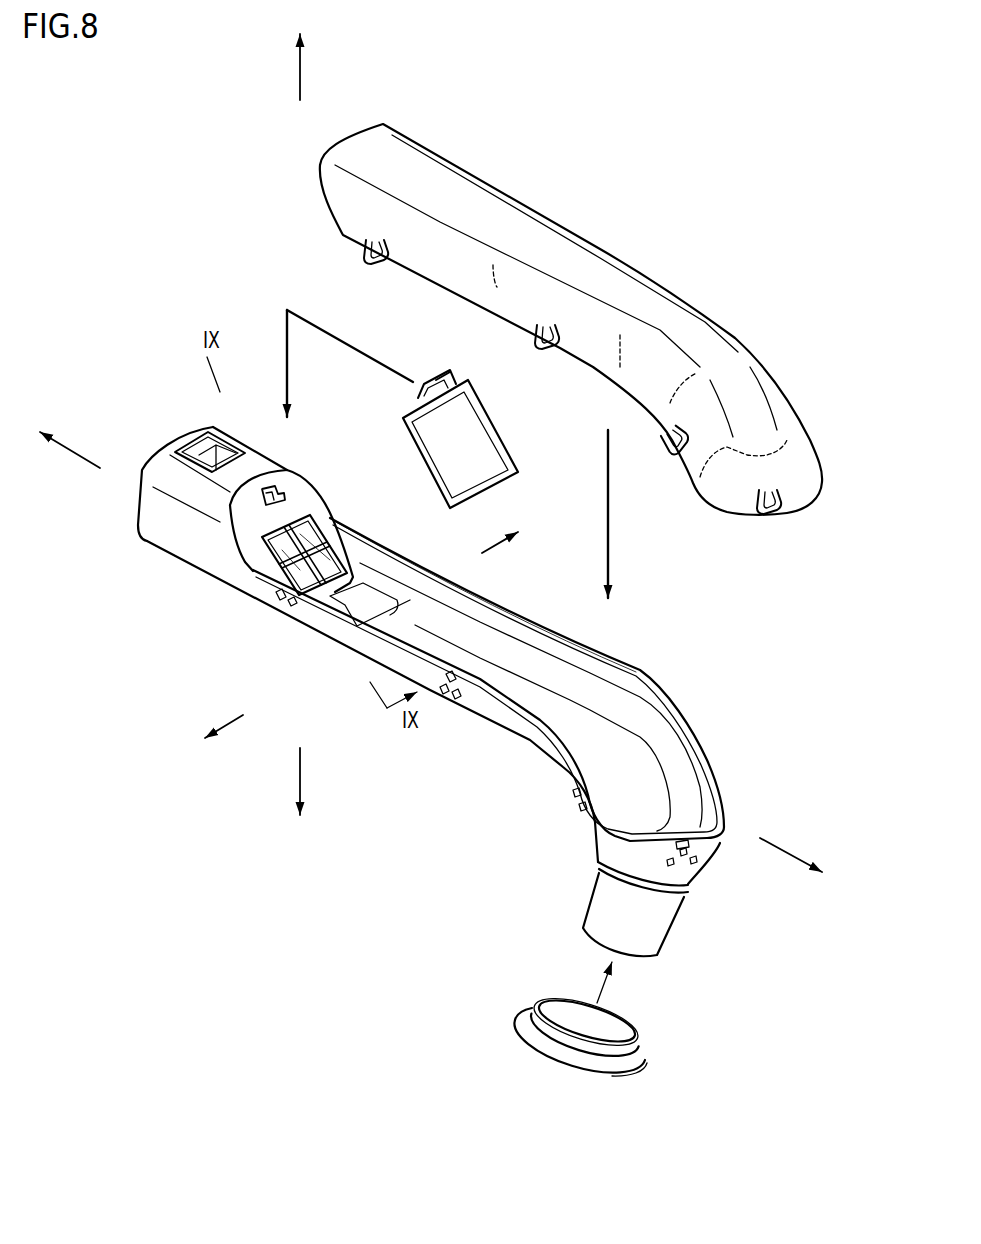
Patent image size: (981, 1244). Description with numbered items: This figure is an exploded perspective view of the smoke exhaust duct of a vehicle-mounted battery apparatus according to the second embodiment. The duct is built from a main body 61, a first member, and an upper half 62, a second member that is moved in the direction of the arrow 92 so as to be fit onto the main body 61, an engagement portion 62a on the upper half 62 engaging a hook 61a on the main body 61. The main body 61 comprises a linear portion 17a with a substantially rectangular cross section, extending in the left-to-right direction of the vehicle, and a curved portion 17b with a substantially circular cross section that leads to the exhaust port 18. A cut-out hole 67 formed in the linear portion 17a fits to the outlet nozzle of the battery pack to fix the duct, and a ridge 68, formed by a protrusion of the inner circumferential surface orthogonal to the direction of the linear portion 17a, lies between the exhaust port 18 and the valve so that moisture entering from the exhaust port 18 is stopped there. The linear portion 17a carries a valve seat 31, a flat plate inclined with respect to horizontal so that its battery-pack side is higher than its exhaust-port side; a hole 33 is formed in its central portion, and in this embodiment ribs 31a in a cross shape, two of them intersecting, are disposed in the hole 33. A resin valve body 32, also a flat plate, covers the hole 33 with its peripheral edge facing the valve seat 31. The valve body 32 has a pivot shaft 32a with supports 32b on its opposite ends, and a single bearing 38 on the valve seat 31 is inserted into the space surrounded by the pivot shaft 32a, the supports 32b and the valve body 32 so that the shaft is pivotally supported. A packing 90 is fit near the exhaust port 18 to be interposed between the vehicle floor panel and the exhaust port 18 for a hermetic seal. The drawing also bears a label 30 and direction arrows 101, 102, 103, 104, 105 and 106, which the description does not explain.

The linear portion 17a is at (234, 524).
The curved portion 17b is at (712, 741).
The exhaust port 18 is at (648, 930).
The filter unit 30 is at (325, 420).
The valve seat 31 is at (268, 558).
The ribs 31a is at (305, 530).
The valve body 32 is at (468, 445).
The pivot shaft 32a is at (432, 390).
The support 32b is at (453, 380).
The hole 33 is at (336, 522).
The bearing 38 is at (283, 490).
The main body 61 is at (435, 701).
The hook 61a is at (460, 690).
The upper half 62 is at (641, 278).
The engagement portion 62a is at (558, 356).
The cut-out hole 67 is at (195, 455).
The ridge 68 is at (350, 630).
The packing 90 is at (523, 1030).
The arrow 92 is at (611, 518).
The upward direction 101 is at (298, 78).
The downward direction 102 is at (298, 772).
The rearward direction 103 is at (778, 848).
The forward direction 104 is at (77, 454).
The rightward direction 105 is at (487, 555).
The leftward direction 106 is at (233, 718).